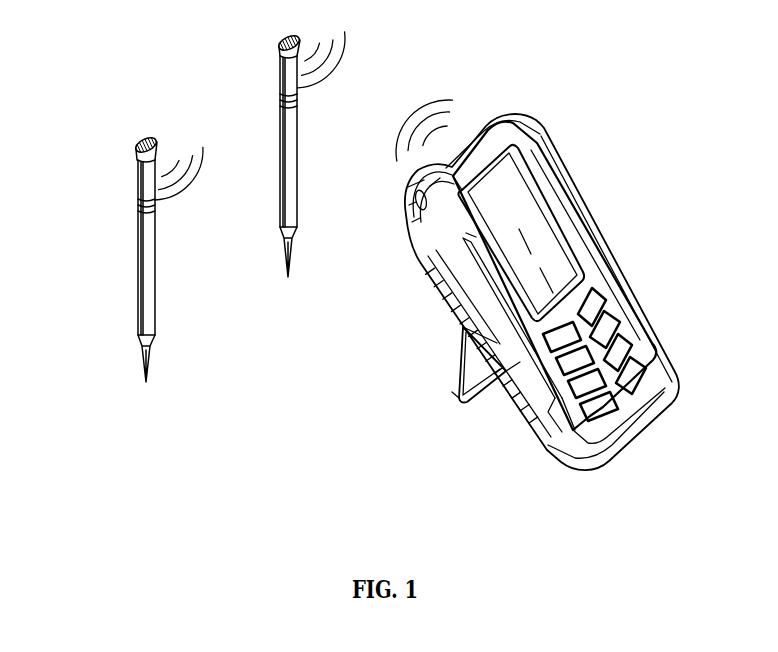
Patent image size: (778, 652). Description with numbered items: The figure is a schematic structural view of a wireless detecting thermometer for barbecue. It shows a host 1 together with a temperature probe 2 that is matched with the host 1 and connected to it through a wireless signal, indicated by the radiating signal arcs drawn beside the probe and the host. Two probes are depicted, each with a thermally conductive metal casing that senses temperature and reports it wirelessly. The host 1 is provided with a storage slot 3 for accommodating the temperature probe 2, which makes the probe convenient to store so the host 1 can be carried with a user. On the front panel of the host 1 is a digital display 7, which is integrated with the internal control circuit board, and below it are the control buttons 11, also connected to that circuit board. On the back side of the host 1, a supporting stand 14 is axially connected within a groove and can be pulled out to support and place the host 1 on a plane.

The host 1 is at (520, 432).
The temperature probe 2 is at (135, 268).
The storage slot 3 is at (406, 228).
The digital display 7 is at (533, 233).
The control buttons 11 is at (630, 340).
The supporting stand 14 is at (455, 383).